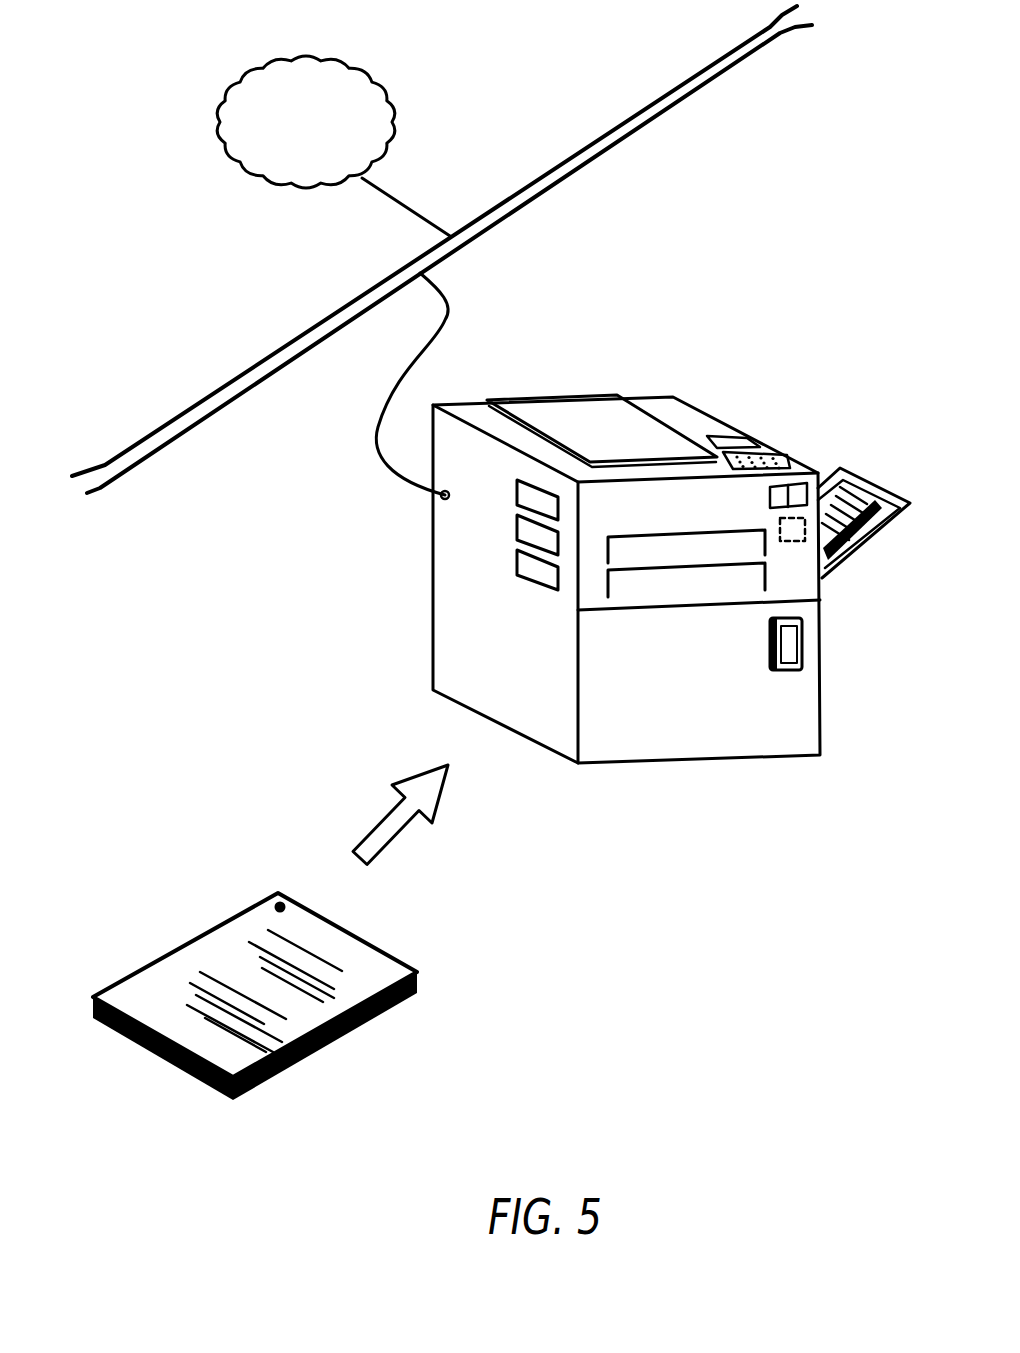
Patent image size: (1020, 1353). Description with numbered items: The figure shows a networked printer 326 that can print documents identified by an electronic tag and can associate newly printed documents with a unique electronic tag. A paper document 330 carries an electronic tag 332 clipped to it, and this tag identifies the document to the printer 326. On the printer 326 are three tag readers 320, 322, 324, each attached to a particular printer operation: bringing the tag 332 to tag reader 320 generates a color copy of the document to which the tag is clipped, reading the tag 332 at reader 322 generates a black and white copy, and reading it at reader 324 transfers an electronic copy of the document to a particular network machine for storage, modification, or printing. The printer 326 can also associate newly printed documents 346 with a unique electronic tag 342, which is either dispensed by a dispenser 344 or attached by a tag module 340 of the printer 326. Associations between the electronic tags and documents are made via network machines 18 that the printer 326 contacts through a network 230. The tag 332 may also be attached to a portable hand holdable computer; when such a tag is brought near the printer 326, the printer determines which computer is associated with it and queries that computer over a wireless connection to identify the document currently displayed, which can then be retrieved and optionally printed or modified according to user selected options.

The network machines 18 is at (328, 144).
The network 230 is at (283, 346).
The networked printer 326 is at (704, 368).
The tag reader 320 is at (533, 504).
The tag reader 322 is at (532, 537).
The tag reader 324 is at (535, 572).
The tag module 340 is at (793, 540).
The unique electronic tag 342 is at (858, 503).
The dispenser 344 is at (787, 642).
The newly printed documents 346 is at (840, 467).
The paper document 330 is at (378, 938).
The electronic tag 332 is at (280, 903).